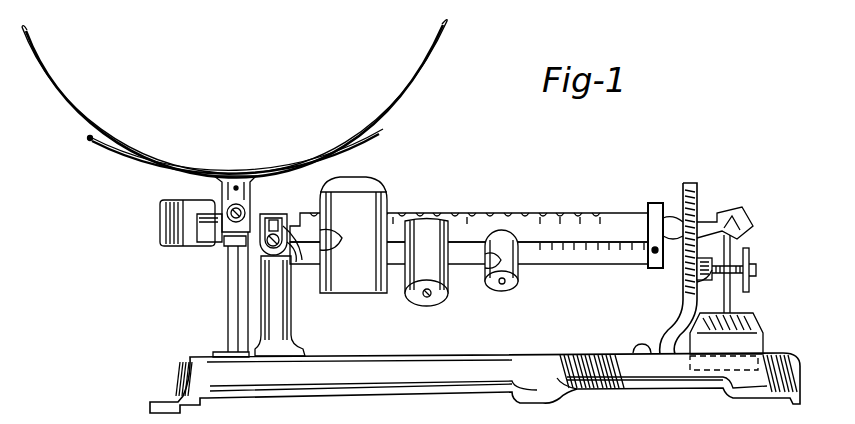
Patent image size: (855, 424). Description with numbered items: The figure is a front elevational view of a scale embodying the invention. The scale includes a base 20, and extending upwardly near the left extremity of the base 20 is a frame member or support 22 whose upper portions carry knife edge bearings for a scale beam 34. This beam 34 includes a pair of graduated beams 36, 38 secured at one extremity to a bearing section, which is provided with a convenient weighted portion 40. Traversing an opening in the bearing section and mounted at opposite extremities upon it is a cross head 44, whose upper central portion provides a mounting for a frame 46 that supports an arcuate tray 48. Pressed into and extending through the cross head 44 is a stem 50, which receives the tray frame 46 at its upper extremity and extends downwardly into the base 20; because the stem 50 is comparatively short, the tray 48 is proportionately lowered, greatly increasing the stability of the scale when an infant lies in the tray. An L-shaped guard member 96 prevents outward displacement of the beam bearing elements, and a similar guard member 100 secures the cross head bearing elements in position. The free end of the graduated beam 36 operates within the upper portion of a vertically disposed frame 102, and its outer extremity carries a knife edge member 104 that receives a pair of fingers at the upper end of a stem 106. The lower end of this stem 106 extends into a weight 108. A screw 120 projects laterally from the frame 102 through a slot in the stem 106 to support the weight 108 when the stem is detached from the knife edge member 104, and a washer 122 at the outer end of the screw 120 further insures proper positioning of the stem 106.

The base 20 is at (415, 388).
The frame member or support 22 is at (300, 323).
The scale beam 34 is at (410, 210).
The graduated beam 36 is at (615, 212).
The graduated beam 38 is at (556, 262).
The weighted portion 40 is at (158, 213).
The cross head 44 is at (250, 193).
The frame 46 is at (375, 138).
The arcuate tray 48 is at (434, 62).
The stem 50 is at (226, 282).
The L-shaped guard member 96 is at (276, 220).
The guard member 100 is at (222, 243).
The vertically disposed frame 102 is at (697, 205).
The knife edge member 104 is at (754, 237).
The stem 106 is at (731, 300).
The weight 108 is at (764, 337).
The screw 120 is at (696, 285).
The washer 122 is at (750, 282).